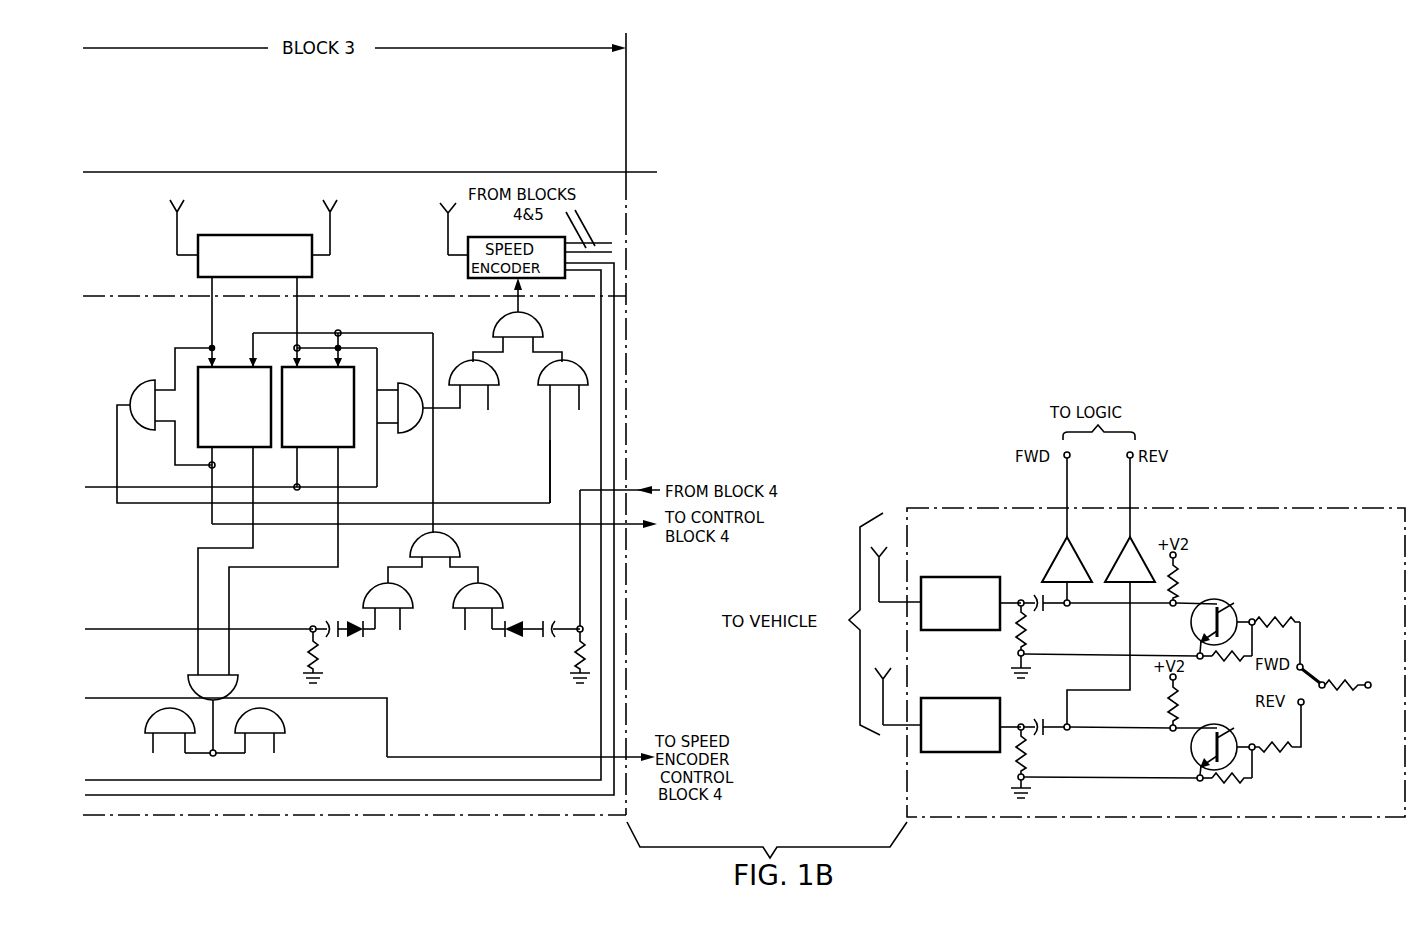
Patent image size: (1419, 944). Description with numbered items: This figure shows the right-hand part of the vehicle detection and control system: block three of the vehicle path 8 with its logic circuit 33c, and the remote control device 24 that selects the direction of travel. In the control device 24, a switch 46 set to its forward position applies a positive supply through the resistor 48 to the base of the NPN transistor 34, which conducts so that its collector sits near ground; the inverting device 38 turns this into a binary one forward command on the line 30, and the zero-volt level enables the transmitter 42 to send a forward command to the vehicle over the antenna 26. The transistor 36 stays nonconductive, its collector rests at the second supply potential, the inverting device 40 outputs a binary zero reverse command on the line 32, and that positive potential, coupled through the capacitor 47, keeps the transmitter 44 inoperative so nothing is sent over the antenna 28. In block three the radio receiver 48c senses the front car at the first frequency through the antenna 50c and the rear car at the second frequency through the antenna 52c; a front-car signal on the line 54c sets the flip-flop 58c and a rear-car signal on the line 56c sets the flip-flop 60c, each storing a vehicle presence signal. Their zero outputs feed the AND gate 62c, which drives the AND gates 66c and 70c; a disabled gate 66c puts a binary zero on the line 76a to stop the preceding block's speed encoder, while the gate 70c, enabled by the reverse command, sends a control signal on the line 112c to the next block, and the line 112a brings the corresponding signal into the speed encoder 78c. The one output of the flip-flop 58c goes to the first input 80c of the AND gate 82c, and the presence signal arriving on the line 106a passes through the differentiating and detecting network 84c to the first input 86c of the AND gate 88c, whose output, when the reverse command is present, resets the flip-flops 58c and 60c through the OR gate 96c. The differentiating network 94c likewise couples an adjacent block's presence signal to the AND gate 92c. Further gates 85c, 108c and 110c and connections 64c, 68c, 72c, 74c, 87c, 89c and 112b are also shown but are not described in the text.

The vehicle path 8 is at (110, 170).
The control device 24 is at (956, 505).
The antenna 26 is at (892, 556).
The antenna 28 is at (896, 680).
The line 30 is at (1066, 492).
The line 32 is at (1132, 492).
The logic circuit 33c is at (148, 296).
The NPN transistor 34 is at (1224, 605).
The NPN transistor 36 is at (1212, 730).
The inverting device 38 is at (1052, 558).
The inverting device 40 is at (1115, 558).
The signal transmitter 42 is at (960, 576).
The signal transmitter 44 is at (964, 684).
The switch 46 is at (1320, 688).
The capacitor 47 is at (1044, 735).
The resistor 48 is at (1347, 677).
The radio signal receiver 48c is at (248, 234).
The antenna 50c is at (182, 202).
The antenna 52c is at (322, 202).
The line 54c is at (210, 318).
The line 56c is at (297, 312).
The flip-flop 58c is at (233, 447).
The flip-flop 60c is at (318, 447).
The AND gate 62c is at (238, 690).
The forward gate input line 64c is at (195, 764).
The AND gate 66c is at (150, 720).
The reverse gate input line 68c is at (245, 758).
The AND gate 70c is at (277, 716).
The reverse input line 72c is at (283, 744).
The forward input line 74c is at (150, 748).
The line 76a is at (142, 697).
The speed encoder 78c is at (496, 236).
The first input 80c is at (174, 449).
The AND gate 82c is at (140, 388).
The differentiating and detecting network 84c is at (370, 666).
The forward AND gate 85c is at (575, 360).
The first input 86c is at (497, 325).
The AND gate input line 87c is at (168, 360).
The AND gate 88c is at (367, 598).
The gate input line 89c is at (550, 460).
The AND gate 92c is at (498, 604).
The differentiating network 94c is at (559, 666).
The OR gate 96c is at (458, 549).
The line 106a is at (148, 628).
The AND gate 108c is at (413, 383).
The reverse AND gate 110c is at (463, 362).
The line 112a is at (107, 779).
The speed encoder output line 112b is at (135, 796).
The line 112c is at (572, 757).